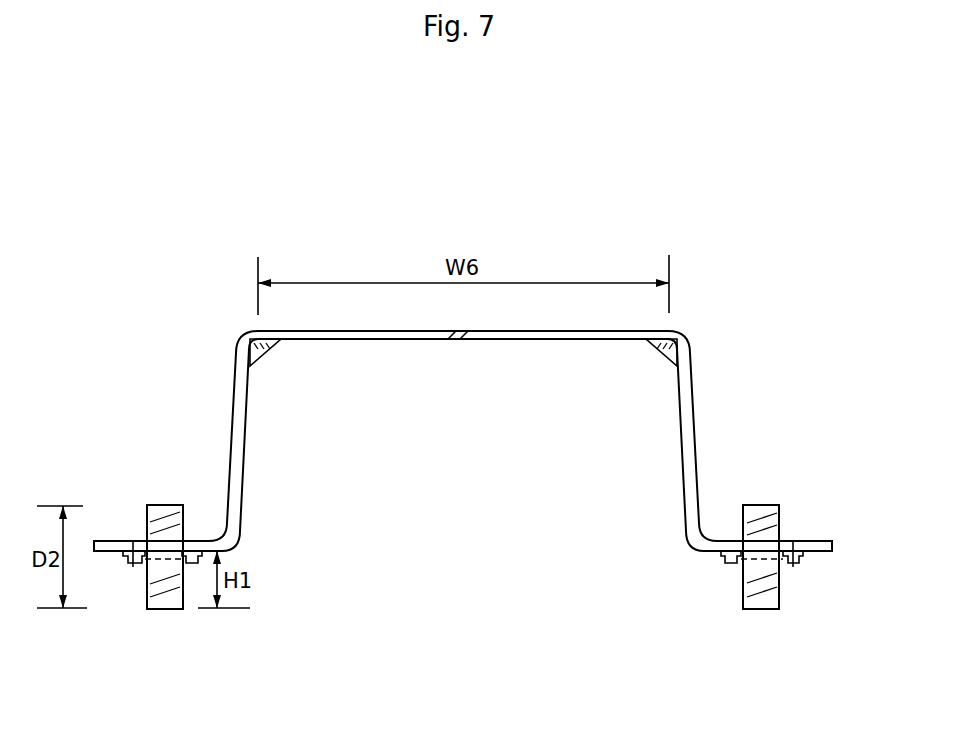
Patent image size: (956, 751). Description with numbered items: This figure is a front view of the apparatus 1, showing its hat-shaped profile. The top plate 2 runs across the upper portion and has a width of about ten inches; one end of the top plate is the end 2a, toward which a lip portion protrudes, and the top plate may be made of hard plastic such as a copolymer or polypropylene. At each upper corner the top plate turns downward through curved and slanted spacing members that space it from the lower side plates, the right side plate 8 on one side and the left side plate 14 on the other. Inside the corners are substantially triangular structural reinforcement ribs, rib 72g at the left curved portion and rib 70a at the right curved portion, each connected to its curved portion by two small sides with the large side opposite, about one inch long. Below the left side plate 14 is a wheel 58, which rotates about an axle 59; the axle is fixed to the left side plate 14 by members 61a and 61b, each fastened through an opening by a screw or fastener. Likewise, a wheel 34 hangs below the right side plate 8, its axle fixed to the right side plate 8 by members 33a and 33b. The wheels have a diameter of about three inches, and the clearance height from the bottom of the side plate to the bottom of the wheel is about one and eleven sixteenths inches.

The apparatus 1 is at (207, 358).
The top plate 2 is at (410, 339).
The end of the top plate 2a is at (480, 339).
The rib 72g is at (266, 344).
The rib 70a is at (667, 358).
The left side plate 14 is at (132, 545).
The right side plate 8 is at (798, 549).
The wheel 58 is at (166, 592).
The wheel 34 is at (762, 592).
The axle 59 is at (125, 563).
The member 61a is at (133, 563).
The member 61b is at (192, 563).
The member 33a is at (795, 563).
The member 33b is at (732, 563).